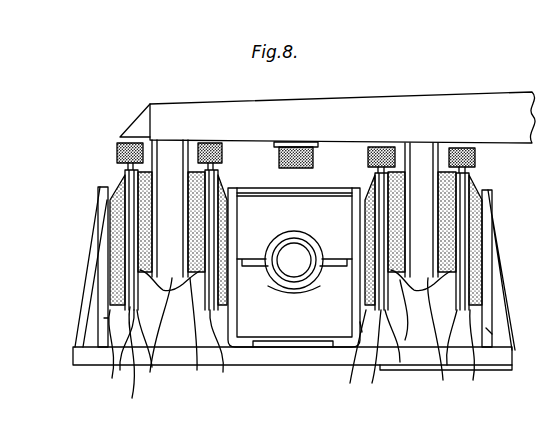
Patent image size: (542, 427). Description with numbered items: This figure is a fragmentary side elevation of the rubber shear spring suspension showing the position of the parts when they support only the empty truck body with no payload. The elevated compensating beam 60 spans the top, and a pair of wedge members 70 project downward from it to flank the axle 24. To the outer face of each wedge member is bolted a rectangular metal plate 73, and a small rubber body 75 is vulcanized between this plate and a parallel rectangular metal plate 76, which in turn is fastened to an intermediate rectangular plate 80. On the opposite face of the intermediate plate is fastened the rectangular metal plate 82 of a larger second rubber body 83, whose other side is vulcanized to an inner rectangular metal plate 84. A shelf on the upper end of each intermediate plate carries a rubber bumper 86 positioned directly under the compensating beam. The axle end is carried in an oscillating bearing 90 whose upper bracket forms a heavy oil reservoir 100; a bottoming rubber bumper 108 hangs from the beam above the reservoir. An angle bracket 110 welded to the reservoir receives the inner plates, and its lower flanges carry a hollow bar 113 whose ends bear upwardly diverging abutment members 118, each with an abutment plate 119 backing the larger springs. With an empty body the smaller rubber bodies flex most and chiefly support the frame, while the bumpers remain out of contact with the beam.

The compensating beam 60 is at (470, 92).
The wedge member 70 is at (170, 160).
The rubber bumper 86 is at (117, 150).
The bottoming rubber bumper 108 is at (298, 147).
The reservoir 100 is at (314, 191).
The angle bracket 110 is at (237, 208).
The rubber body 75 is at (197, 198).
The rubber body 83 is at (222, 223).
The axle 24 is at (298, 244).
The abutment plate 119 is at (107, 242).
The abutment member 118 is at (80, 292).
The inner rectangular metal plate 84 is at (108, 324).
The rectangular metal plate 73 is at (295, 292).
The intermediate rectangular plate 80 is at (408, 342).
The rectangular metal plate 76 is at (408, 322).
The oscillating bearing 90 is at (281, 291).
The rectangular metal plate 82 is at (301, 347).
The bar 113 is at (398, 366).